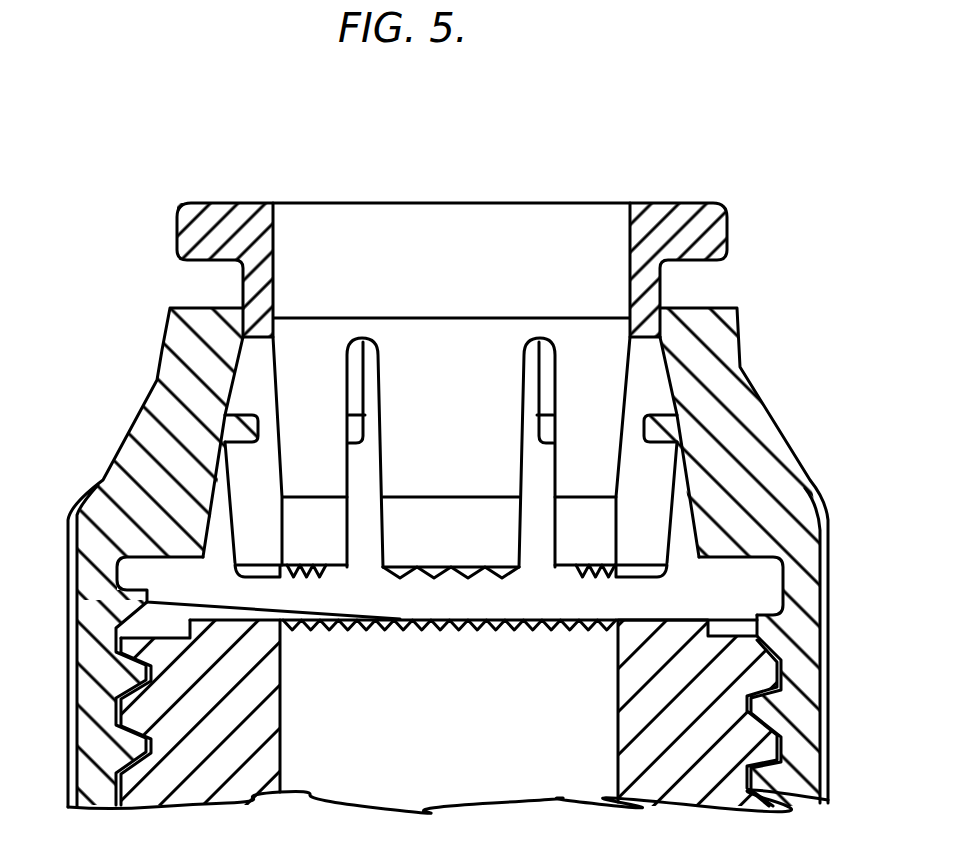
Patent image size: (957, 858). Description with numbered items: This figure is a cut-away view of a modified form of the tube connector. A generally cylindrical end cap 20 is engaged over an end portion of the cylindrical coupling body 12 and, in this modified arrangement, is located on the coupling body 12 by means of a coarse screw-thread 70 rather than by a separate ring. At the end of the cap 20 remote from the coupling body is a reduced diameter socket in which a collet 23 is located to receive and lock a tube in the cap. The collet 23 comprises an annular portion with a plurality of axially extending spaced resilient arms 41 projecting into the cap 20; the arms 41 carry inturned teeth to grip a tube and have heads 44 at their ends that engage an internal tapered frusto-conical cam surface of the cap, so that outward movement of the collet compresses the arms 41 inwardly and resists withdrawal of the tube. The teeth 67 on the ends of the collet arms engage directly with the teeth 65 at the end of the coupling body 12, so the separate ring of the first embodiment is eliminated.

The collet 23 is at (283, 183).
The resilient arms 41 is at (315, 380).
The heads 44 is at (242, 488).
The end cap 20 is at (147, 427).
The coarse screw-thread 70 is at (780, 697).
The teeth 65 is at (388, 620).
The teeth 67 is at (473, 573).
The coupling body 12 is at (262, 727).